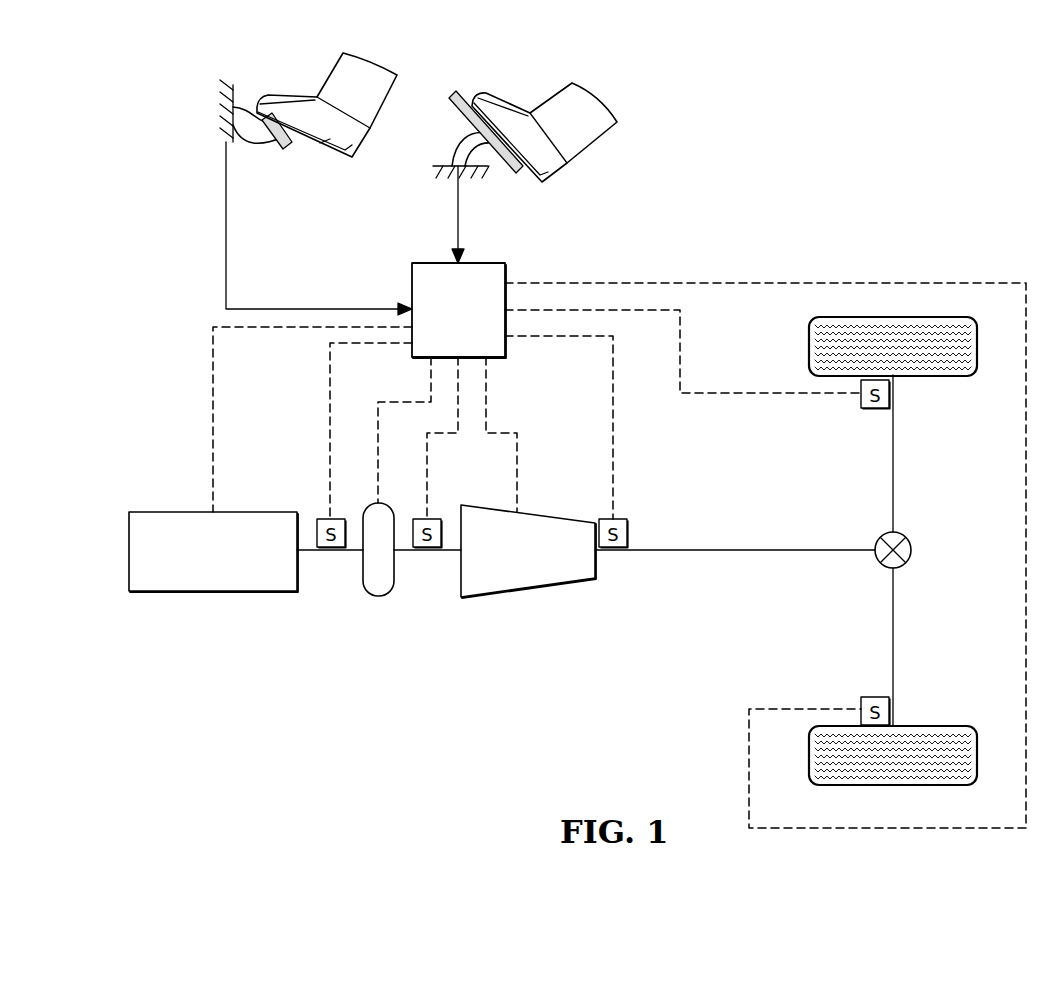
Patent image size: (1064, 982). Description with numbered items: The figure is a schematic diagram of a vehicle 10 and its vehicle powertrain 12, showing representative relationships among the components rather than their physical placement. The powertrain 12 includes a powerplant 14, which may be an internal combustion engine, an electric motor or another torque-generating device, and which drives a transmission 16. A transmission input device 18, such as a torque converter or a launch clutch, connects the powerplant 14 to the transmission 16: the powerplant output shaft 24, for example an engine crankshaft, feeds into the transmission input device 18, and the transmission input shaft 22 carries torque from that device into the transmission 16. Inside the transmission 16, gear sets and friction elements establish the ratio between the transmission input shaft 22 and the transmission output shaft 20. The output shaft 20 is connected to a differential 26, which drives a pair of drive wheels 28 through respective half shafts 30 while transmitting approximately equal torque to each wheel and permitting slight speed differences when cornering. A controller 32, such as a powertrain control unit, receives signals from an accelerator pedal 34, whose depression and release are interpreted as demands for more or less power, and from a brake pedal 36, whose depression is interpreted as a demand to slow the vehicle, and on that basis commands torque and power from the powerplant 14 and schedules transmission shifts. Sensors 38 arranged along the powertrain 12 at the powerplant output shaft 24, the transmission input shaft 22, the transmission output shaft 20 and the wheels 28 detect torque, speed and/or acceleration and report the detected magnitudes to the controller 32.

The vehicle 10 is at (852, 128).
The vehicle powertrain 12 is at (143, 423).
The powerplant 14 is at (129, 548).
The transmission 16 is at (528, 590).
The transmission input device 18 is at (381, 597).
The transmission output shaft 20 is at (728, 553).
The transmission input shaft 22 is at (402, 553).
The powerplant output shaft 24 is at (308, 553).
The differential 26 is at (912, 551).
The drive wheels 28 is at (977, 347).
The half shafts 30 is at (893, 462).
The controller 32 is at (490, 262).
The accelerator pedal 34 is at (466, 128).
The brake pedal 36 is at (294, 147).
The sensors 38 is at (328, 518).